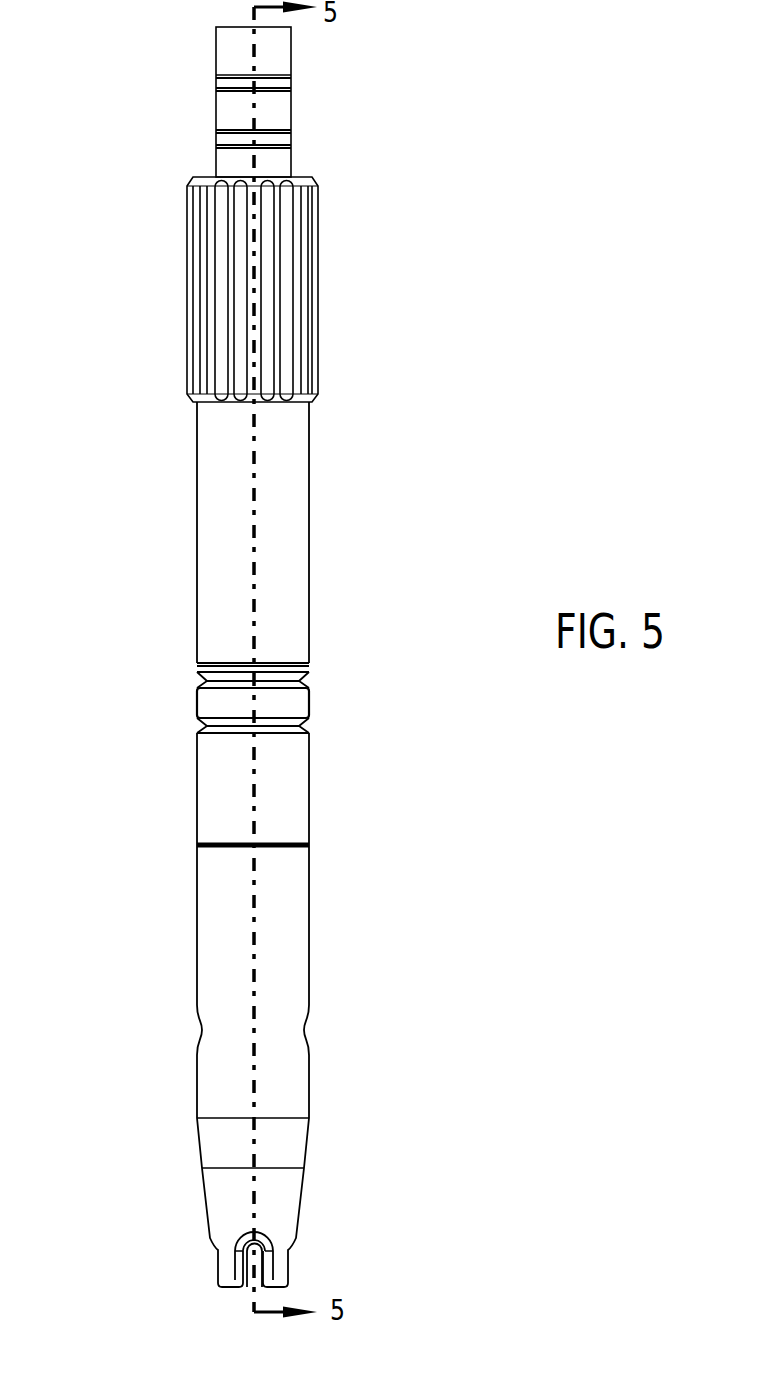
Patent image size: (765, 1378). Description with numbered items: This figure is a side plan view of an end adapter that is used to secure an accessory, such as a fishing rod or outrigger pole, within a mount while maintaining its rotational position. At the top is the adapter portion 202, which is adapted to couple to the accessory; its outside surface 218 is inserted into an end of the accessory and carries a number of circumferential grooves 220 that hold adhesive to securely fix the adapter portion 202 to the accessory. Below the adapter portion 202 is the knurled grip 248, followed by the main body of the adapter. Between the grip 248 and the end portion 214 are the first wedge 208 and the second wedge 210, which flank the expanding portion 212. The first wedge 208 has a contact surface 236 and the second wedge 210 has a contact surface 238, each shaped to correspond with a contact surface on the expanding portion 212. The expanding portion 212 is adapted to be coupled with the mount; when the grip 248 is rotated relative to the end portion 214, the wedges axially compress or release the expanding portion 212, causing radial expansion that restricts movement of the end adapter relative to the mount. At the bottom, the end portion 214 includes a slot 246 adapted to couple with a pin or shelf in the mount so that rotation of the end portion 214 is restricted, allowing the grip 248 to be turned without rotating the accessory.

The adapter portion 202 is at (291, 69).
The outside surface 218 is at (291, 100).
The circumferential grooves 220 is at (213, 87).
The grip 248 is at (293, 478).
The first wedge 208 is at (310, 672).
The contact surface 236 is at (205, 684).
The expanding portion 212 is at (310, 695).
The contact surface 238 is at (310, 723).
The second wedge 210 is at (210, 798).
The end portion 214 is at (307, 912).
The slots 246 is at (270, 1255).